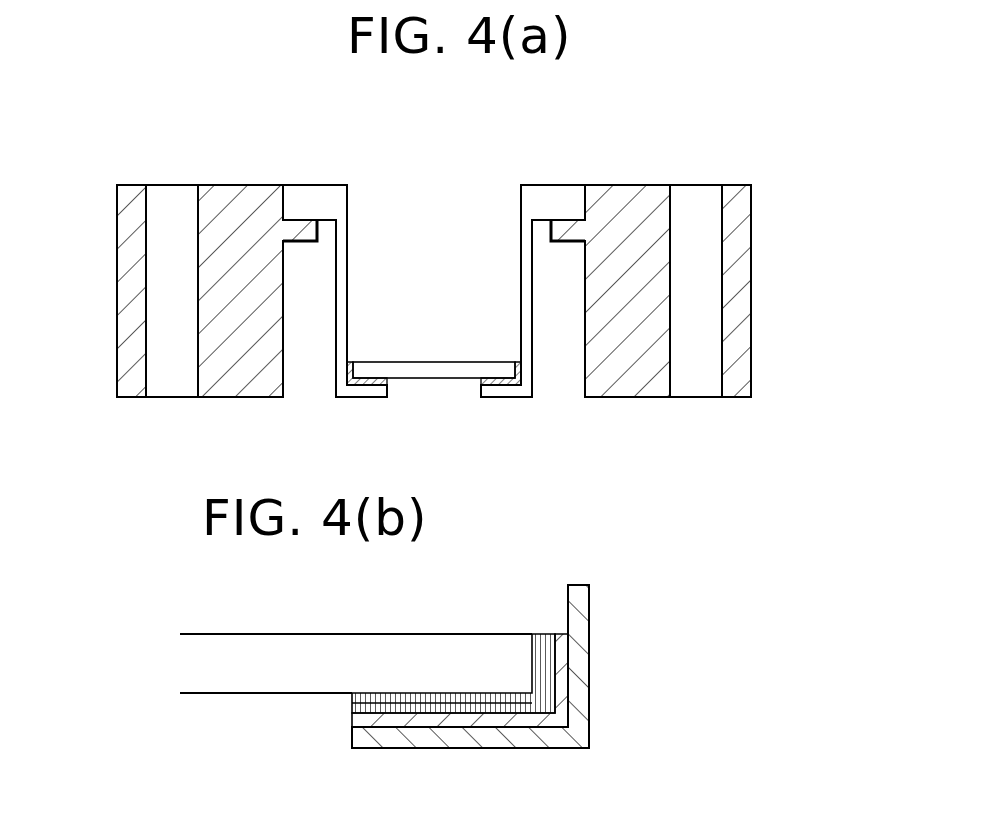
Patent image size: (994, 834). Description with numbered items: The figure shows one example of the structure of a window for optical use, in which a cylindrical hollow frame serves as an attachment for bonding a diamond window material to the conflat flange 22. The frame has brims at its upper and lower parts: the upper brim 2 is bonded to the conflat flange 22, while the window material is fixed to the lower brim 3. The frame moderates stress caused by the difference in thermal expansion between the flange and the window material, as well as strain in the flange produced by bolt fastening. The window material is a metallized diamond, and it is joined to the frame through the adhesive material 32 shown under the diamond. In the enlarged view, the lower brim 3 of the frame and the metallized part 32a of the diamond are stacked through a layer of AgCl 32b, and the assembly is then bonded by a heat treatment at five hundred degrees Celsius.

The upper brim 2 is at (313, 184).
The lower brim 3 is at (493, 398).
The conflat flange 22 is at (638, 185).
The adhesive material 32 is at (520, 397).
The metallized part 32a is at (353, 711).
The AgCl 32b is at (510, 718).